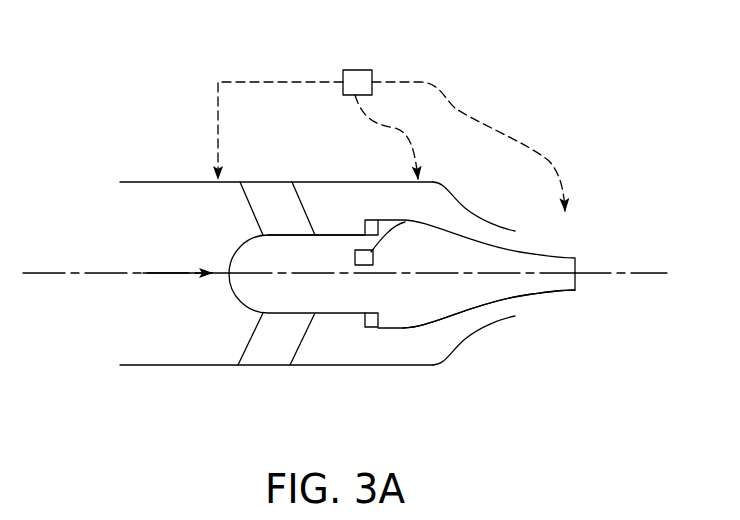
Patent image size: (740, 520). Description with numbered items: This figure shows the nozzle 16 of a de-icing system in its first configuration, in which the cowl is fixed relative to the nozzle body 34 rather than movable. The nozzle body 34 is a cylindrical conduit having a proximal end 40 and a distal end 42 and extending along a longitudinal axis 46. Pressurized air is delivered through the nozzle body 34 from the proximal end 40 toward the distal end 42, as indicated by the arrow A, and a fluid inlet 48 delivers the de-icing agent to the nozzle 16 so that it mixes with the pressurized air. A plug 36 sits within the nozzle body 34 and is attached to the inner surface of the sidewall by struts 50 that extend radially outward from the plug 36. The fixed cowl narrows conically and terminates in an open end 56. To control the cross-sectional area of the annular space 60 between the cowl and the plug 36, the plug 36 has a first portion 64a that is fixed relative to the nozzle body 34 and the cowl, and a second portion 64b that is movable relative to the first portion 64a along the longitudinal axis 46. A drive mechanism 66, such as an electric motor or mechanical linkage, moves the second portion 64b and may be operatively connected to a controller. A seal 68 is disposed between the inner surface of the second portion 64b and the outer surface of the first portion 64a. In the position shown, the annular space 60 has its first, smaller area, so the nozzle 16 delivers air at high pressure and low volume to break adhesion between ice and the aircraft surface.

The nozzle 16 is at (538, 109).
The nozzle body 34 is at (195, 373).
The plug 36 is at (408, 280).
The proximal end 40 is at (128, 367).
The distal end 42 is at (503, 329).
The longitudinal axis 46 is at (647, 275).
The fluid inlet 48 is at (357, 86).
The strut 50 is at (247, 210).
The open end 56 is at (515, 308).
The annular space 60 is at (496, 237).
The first portion 64a is at (332, 293).
The second portion 64b is at (417, 303).
The drive mechanism 66 is at (373, 257).
The seal 68 is at (372, 327).
The arrow A is at (168, 273).